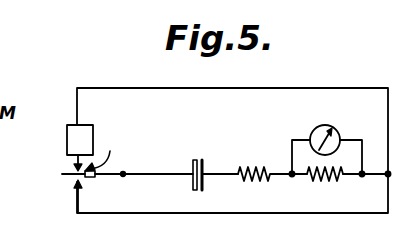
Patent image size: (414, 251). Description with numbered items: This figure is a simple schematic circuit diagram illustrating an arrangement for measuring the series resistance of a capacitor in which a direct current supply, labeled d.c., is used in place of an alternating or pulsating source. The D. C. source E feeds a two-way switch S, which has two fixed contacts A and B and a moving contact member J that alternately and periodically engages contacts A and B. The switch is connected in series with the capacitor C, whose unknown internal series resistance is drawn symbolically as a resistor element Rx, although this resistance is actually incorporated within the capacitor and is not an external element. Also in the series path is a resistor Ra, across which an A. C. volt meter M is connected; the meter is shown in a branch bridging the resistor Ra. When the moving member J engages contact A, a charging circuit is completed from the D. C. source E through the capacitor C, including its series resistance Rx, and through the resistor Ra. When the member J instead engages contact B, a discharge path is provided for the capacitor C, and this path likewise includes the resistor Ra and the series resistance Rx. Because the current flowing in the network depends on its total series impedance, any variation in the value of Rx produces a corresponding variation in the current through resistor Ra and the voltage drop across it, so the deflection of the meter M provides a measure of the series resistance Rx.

The D. C. source E is at (80, 148).
The fixed contact A is at (102, 152).
The moving contact member J is at (101, 164).
The two-way switch S is at (67, 176).
The fixed contact B is at (82, 184).
The capacitor C is at (199, 160).
The series resistance Rx is at (255, 162).
The resistor Ra is at (325, 186).
The A. C. volt meter M is at (325, 125).
The direct current supply d.c. is at (67, 138).